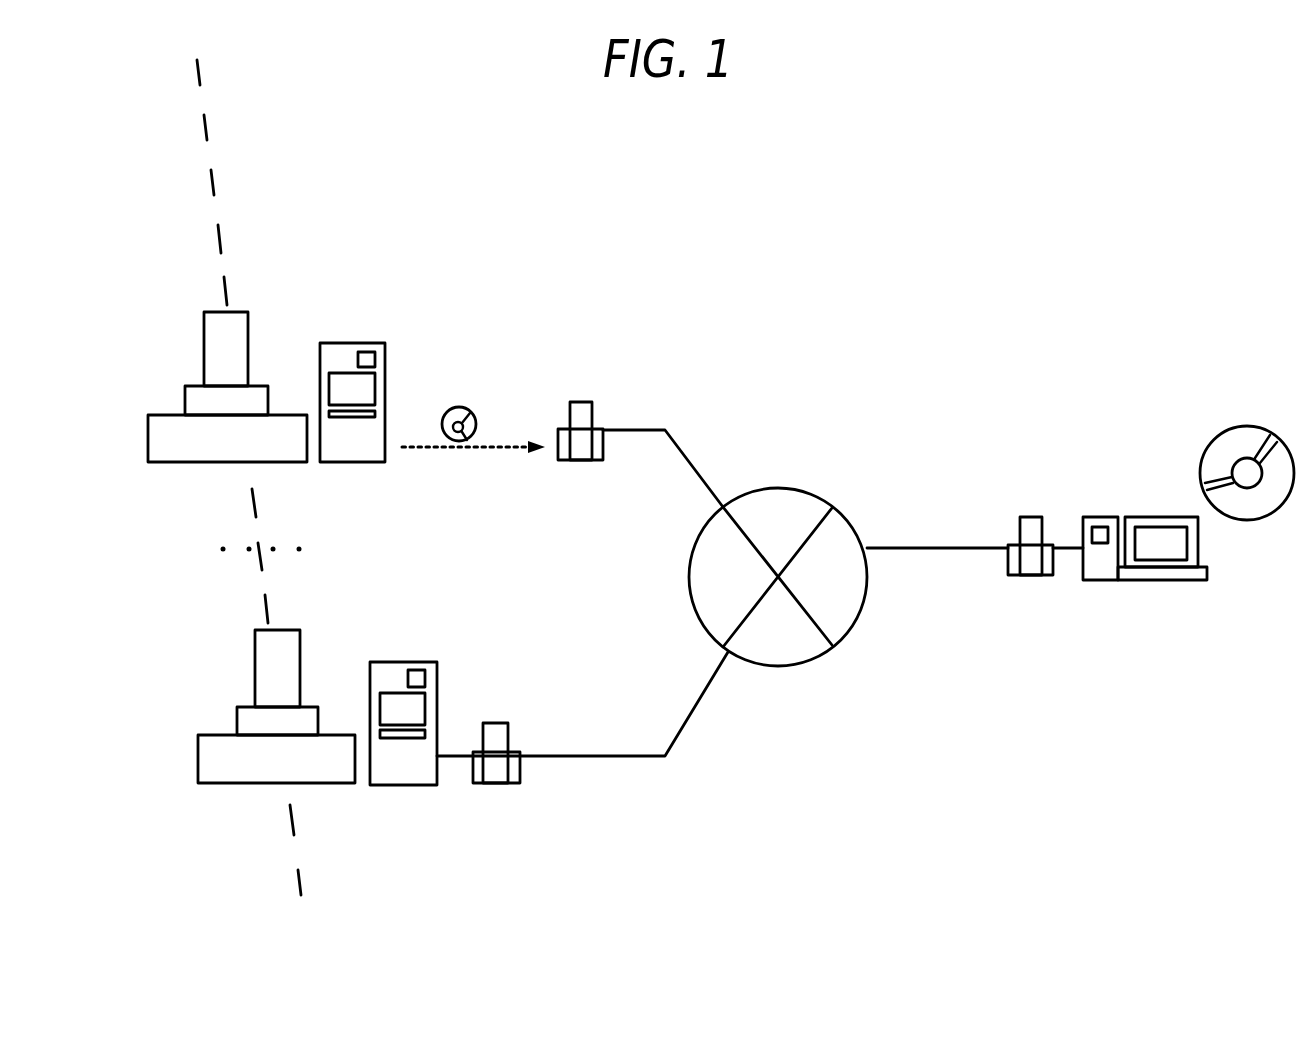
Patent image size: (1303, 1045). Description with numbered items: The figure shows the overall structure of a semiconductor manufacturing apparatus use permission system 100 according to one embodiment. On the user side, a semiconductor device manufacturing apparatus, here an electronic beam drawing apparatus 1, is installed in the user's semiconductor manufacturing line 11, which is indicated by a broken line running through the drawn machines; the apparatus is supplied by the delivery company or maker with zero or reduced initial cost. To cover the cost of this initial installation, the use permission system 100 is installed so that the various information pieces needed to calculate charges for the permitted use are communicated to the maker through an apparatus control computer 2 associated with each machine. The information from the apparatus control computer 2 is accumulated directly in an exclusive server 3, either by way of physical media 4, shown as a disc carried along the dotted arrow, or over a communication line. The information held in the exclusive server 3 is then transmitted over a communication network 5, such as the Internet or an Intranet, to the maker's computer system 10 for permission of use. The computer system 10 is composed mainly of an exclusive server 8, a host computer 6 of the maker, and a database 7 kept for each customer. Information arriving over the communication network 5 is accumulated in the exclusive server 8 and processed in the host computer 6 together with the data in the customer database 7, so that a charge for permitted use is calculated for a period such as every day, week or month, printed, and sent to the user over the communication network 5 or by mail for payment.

The electronic beam drawing apparatus 1 is at (204, 358).
The apparatus control computer 2 is at (343, 343).
The exclusive server 3 is at (595, 402).
The physical media 4 is at (465, 410).
The communication network 5 is at (777, 487).
The host computer 6 is at (1130, 580).
The customer database 7 is at (1230, 430).
The exclusive server 8 is at (1030, 517).
The computer system 10 is at (1125, 302).
The semiconductor manufacturing line 11 is at (200, 83).
The semiconductor manufacturing apparatus use permission system 100 is at (720, 290).